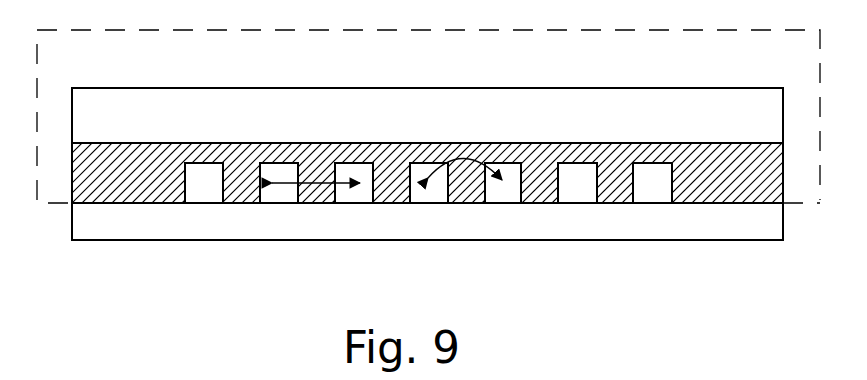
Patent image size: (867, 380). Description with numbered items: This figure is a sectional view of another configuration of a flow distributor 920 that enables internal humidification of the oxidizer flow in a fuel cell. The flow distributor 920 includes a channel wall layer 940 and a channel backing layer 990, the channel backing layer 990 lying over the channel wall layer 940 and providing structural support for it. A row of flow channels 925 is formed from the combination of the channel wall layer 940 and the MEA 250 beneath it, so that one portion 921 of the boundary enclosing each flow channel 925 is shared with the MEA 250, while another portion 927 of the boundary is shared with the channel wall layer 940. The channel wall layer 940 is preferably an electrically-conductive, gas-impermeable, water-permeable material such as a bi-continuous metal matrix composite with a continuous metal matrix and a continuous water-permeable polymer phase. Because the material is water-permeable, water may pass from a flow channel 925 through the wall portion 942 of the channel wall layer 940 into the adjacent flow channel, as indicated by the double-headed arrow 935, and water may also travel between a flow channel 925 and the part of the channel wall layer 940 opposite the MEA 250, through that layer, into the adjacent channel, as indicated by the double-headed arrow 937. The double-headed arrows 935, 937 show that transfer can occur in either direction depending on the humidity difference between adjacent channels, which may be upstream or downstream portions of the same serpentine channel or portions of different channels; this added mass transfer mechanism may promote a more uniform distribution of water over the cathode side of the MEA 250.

The flow distributor 920 is at (113, 73).
The channel backing layer 990 is at (135, 127).
The MEA 250 is at (130, 230).
The double-headed arrow 935 is at (315, 170).
The flow channel 925 is at (203, 180).
The wall portion 942 is at (315, 170).
The portion of flow channel boundary 927 is at (352, 175).
The portion of flow channel boundary 921 is at (352, 175).
The double-headed arrow 937 is at (463, 158).
The channel wall layer 940 is at (727, 204).